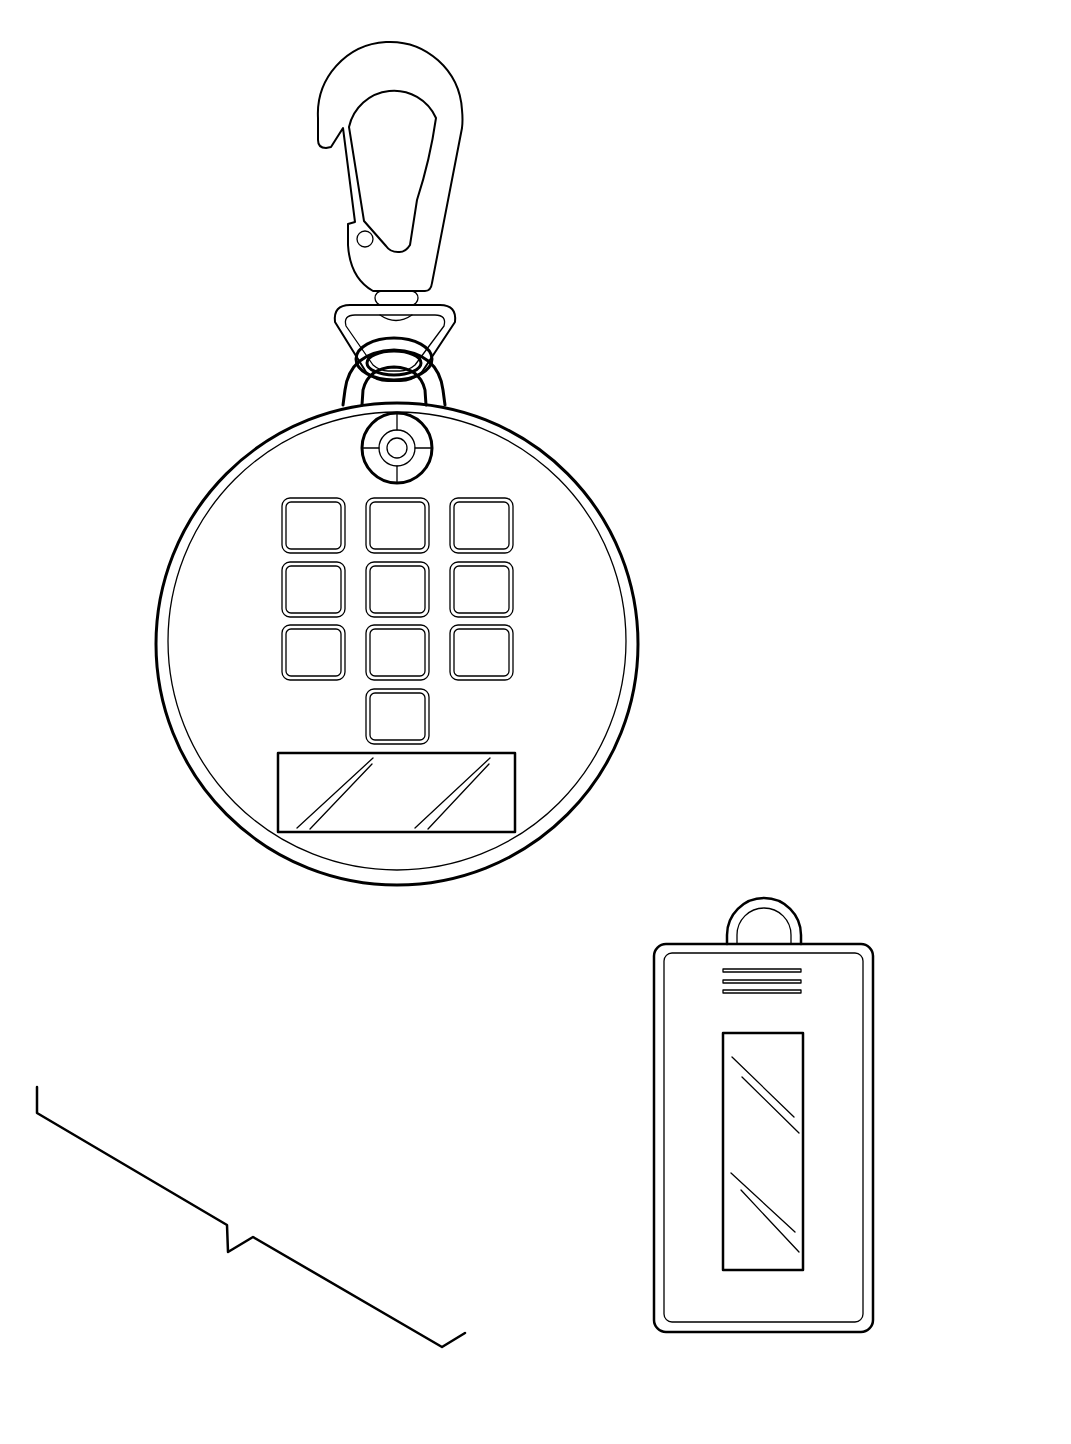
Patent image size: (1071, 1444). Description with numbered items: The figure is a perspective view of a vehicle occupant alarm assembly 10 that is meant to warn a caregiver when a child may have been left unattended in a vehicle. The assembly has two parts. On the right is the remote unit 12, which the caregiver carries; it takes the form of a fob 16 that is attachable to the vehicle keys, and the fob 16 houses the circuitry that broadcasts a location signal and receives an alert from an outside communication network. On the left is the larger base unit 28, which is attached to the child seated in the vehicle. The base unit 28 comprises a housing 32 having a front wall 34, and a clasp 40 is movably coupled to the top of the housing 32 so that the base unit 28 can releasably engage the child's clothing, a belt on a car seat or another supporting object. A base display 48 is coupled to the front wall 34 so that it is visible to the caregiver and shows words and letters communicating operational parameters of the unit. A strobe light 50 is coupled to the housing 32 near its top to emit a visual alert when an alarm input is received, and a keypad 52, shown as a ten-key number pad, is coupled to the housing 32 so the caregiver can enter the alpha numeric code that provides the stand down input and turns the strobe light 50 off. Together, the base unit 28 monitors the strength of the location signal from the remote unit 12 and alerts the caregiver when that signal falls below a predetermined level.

The vehicle occupant alarm assembly 10 is at (772, 197).
The remote unit 12 is at (878, 928).
The fob 16 is at (664, 945).
The base unit 28 is at (265, 398).
The housing 32 is at (583, 487).
The front wall 34 is at (588, 592).
The clasp 40 is at (393, 45).
The base display 48 is at (515, 810).
The strobe light 50 is at (430, 442).
The keypad 52 is at (258, 587).